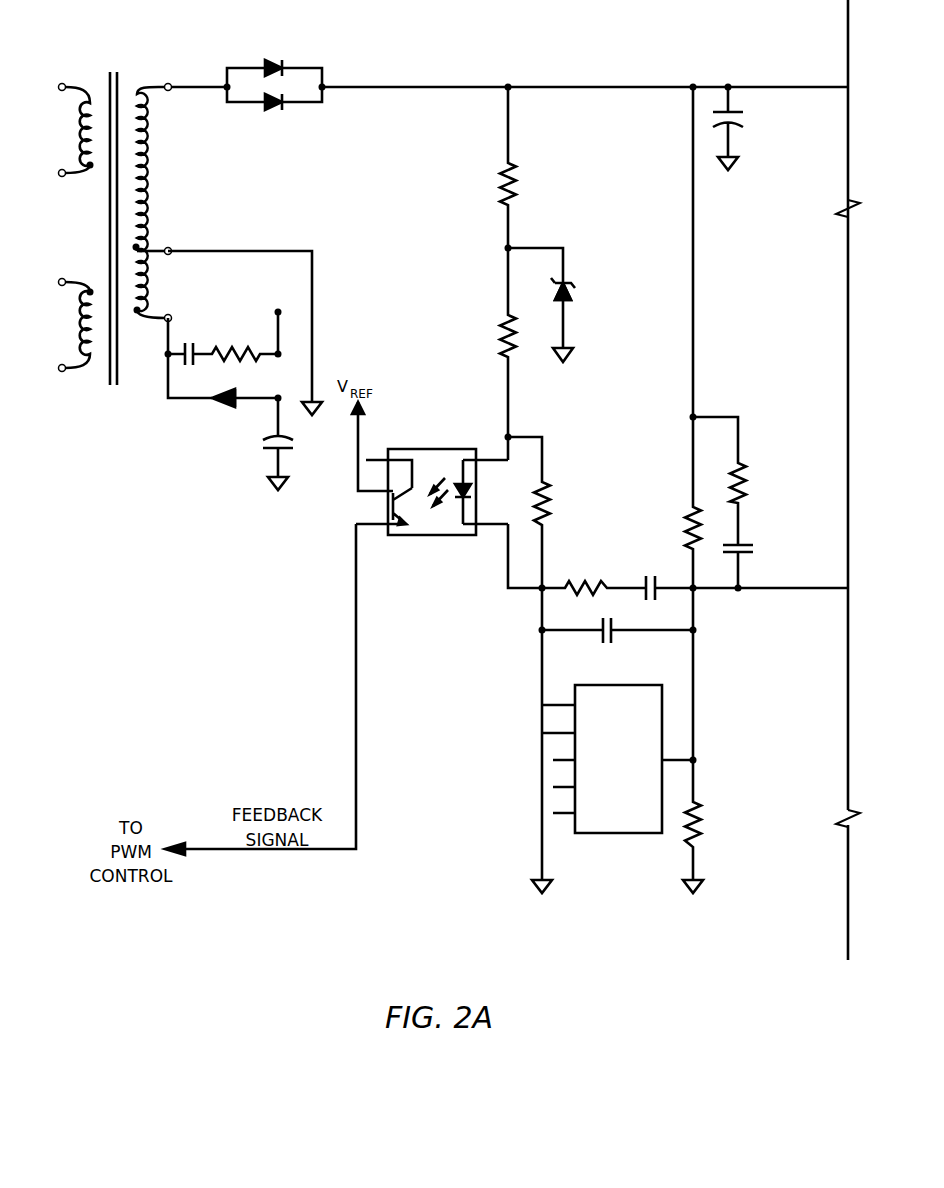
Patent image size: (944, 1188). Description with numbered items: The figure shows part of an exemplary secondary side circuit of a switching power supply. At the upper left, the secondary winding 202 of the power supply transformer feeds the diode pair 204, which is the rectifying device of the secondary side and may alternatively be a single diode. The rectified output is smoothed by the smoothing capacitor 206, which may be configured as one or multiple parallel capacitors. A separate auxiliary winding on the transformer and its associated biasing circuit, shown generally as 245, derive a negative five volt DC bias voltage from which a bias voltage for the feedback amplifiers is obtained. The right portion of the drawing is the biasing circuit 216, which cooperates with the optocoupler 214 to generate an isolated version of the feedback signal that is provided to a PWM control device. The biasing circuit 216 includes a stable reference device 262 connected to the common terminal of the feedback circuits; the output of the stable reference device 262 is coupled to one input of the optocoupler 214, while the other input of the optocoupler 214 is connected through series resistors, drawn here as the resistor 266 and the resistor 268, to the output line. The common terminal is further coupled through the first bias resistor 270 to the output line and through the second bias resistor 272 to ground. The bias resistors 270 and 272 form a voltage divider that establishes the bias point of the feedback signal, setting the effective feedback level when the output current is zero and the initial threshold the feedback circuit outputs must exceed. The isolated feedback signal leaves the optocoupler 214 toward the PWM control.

The secondary winding 202 is at (138, 85).
The diode pair 204 is at (312, 68).
The smoothing capacitor 206 is at (742, 124).
The isolation device 214 is at (443, 536).
The biasing circuit 216 is at (748, 330).
The auxiliary winding and associated biasing circuit 245 is at (198, 437).
The stable reference device 262 is at (635, 835).
The resistor 266 is at (498, 177).
The resistor 268 is at (498, 338).
The first bias resistor 270 is at (683, 517).
The second bias resistor 272 is at (703, 820).